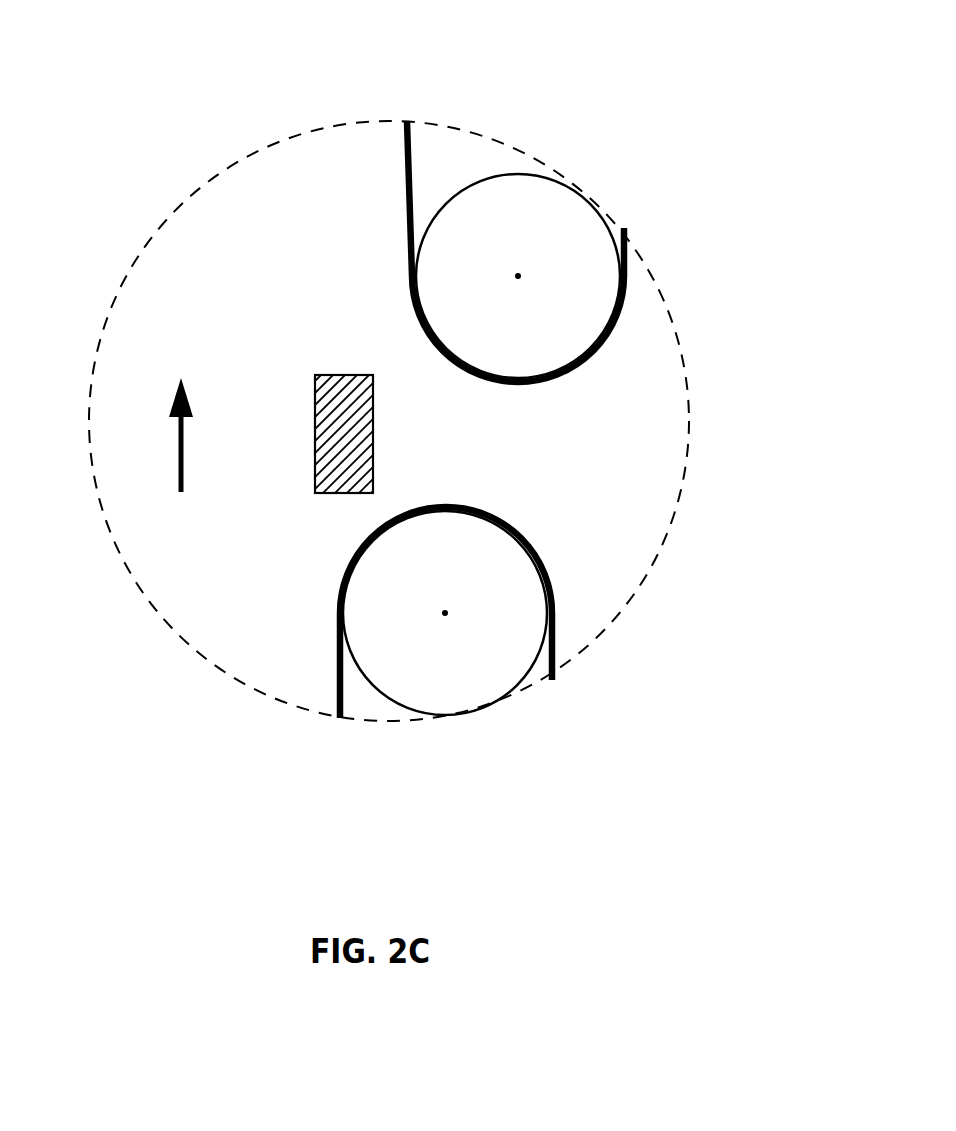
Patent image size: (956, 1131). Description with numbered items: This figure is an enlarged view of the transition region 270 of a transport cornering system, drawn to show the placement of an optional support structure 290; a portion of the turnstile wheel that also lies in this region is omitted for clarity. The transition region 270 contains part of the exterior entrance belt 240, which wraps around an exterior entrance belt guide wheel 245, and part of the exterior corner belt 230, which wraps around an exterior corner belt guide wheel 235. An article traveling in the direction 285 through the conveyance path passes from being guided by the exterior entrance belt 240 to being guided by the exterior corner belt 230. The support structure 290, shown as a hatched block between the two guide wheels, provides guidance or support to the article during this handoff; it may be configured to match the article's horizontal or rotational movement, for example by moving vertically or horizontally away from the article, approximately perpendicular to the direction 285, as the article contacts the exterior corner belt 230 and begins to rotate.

The exterior corner belt 230 is at (404, 130).
The exterior corner belt guide wheel 235 is at (485, 174).
The exterior entrance belt 240 is at (337, 688).
The exterior entrance belt guide wheel 245 is at (375, 692).
The transition region 270 is at (665, 542).
The direction of travel 285 is at (180, 443).
The support structure 290 is at (373, 437).